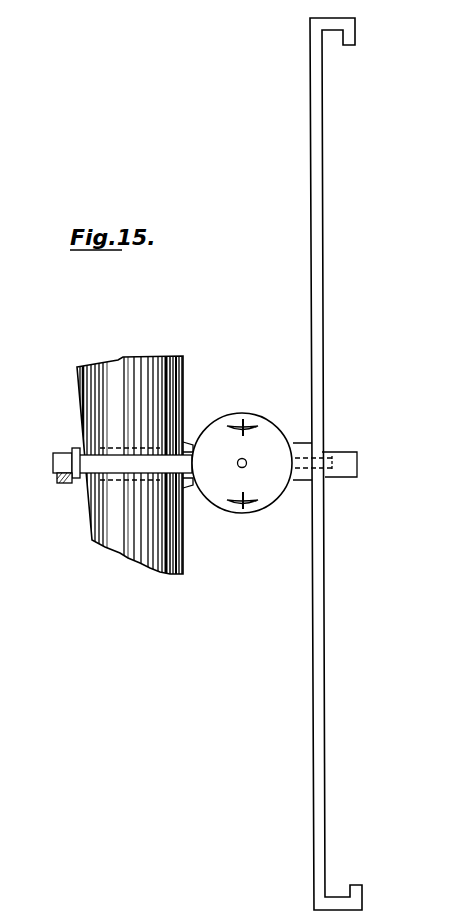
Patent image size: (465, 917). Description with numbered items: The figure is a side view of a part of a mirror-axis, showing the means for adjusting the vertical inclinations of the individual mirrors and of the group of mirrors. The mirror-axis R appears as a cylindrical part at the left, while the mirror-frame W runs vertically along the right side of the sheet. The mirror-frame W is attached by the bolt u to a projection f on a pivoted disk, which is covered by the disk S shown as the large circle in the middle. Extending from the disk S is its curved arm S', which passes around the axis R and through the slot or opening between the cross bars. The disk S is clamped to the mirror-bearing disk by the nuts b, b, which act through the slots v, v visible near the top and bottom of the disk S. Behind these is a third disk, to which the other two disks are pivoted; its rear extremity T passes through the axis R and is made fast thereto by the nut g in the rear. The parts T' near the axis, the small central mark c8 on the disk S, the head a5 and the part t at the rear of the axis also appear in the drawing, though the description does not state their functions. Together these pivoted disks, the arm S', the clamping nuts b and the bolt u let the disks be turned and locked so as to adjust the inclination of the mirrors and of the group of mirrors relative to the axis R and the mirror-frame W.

The mirror-frame W is at (322, 356).
The mirror-axis R is at (123, 357).
The curved arm S' is at (132, 464).
The bolt head a5 is at (54, 462).
The nut t is at (57, 479).
The nut g is at (76, 479).
The rear extremity of third disk T is at (189, 435).
The bracket T' is at (148, 472).
The disk S is at (242, 463).
The center pivot c8 is at (246, 461).
The slot v is at (254, 424).
The nut b is at (243, 419).
The projection f is at (296, 484).
The bolt u is at (335, 477).